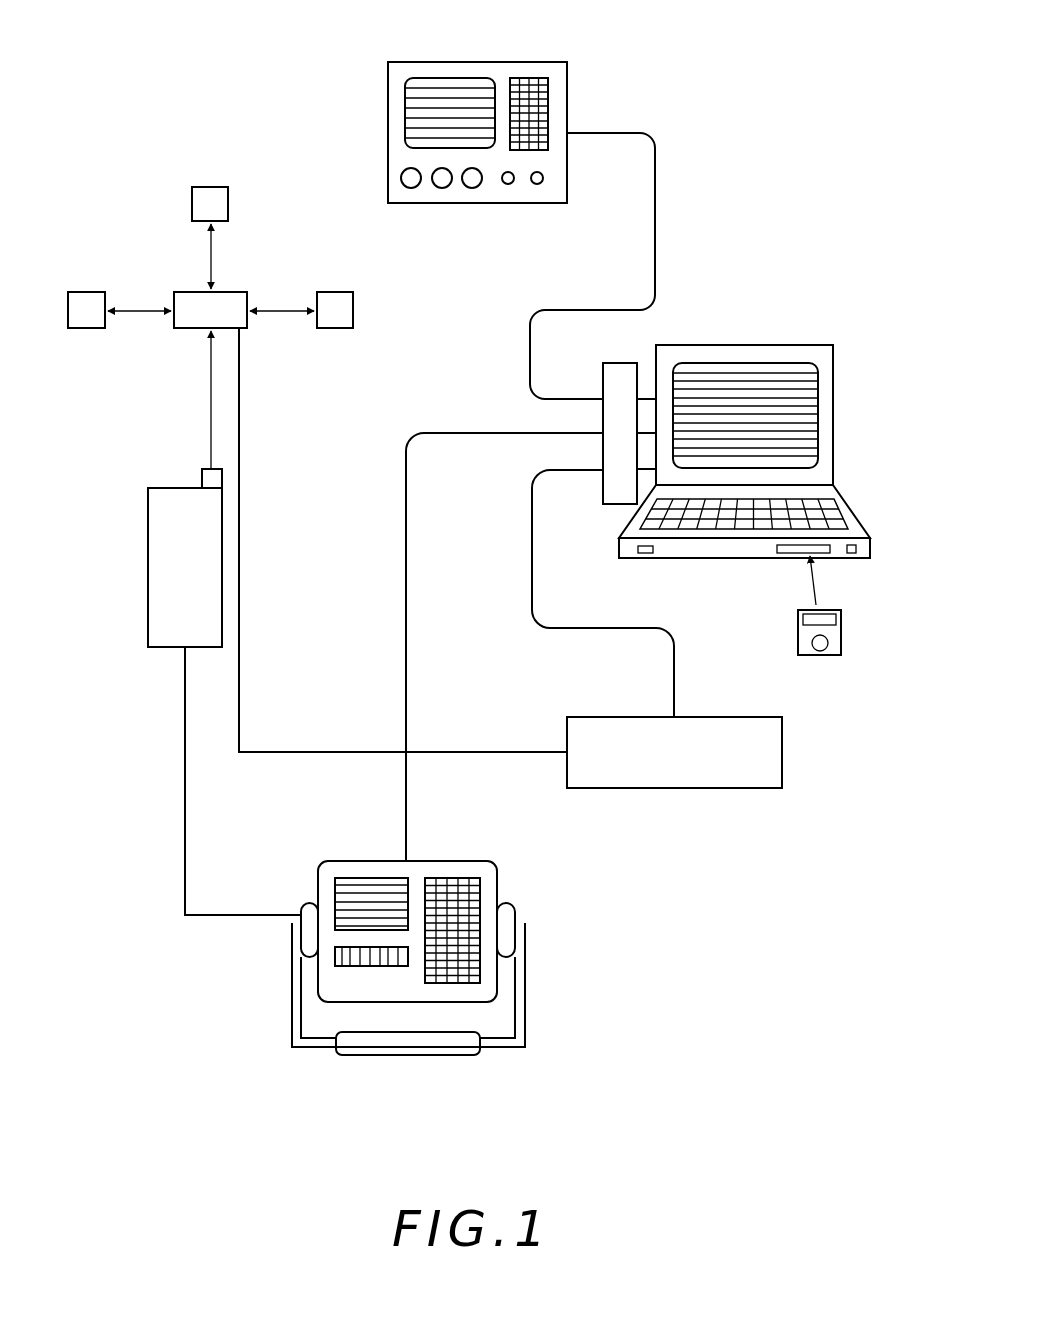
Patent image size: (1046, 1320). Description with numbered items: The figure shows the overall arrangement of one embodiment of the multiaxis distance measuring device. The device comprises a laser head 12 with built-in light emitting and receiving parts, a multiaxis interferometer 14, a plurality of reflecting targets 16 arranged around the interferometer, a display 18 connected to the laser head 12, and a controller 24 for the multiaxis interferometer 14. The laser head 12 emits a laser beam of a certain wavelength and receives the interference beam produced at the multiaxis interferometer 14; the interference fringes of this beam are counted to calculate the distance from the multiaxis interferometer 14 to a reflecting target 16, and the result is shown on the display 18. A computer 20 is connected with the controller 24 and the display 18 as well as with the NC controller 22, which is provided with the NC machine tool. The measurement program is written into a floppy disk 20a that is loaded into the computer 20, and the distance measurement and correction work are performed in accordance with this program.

The laser head 12 is at (181, 563).
The multiaxis interferometer 14 is at (190, 322).
The reflecting targets 16 is at (209, 202).
The display 18 is at (328, 966).
The computer 20 is at (828, 398).
The floppy disk 20a is at (825, 657).
The NC controller 22 is at (498, 70).
The controller 24 is at (667, 790).